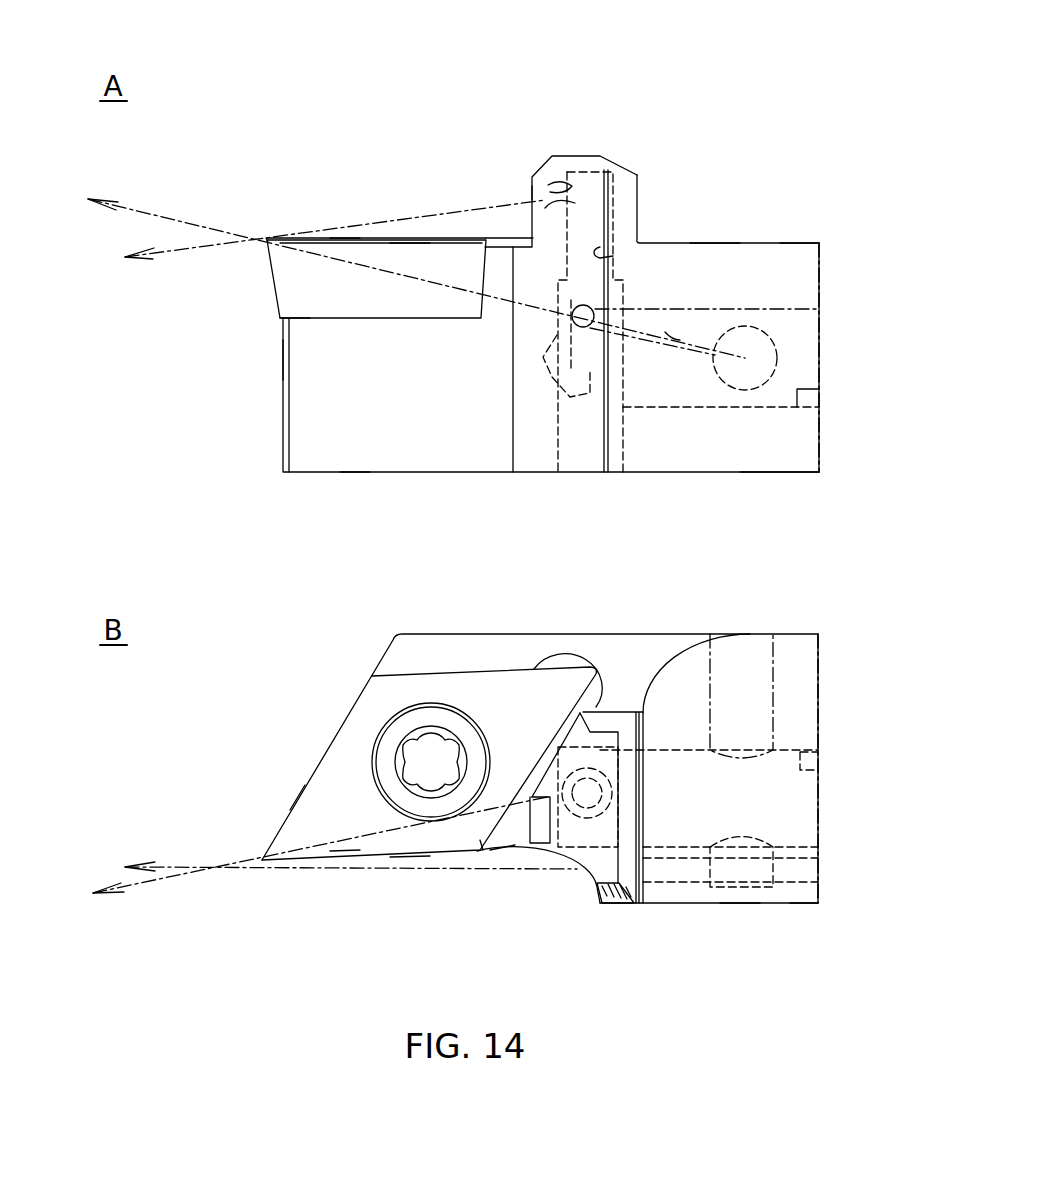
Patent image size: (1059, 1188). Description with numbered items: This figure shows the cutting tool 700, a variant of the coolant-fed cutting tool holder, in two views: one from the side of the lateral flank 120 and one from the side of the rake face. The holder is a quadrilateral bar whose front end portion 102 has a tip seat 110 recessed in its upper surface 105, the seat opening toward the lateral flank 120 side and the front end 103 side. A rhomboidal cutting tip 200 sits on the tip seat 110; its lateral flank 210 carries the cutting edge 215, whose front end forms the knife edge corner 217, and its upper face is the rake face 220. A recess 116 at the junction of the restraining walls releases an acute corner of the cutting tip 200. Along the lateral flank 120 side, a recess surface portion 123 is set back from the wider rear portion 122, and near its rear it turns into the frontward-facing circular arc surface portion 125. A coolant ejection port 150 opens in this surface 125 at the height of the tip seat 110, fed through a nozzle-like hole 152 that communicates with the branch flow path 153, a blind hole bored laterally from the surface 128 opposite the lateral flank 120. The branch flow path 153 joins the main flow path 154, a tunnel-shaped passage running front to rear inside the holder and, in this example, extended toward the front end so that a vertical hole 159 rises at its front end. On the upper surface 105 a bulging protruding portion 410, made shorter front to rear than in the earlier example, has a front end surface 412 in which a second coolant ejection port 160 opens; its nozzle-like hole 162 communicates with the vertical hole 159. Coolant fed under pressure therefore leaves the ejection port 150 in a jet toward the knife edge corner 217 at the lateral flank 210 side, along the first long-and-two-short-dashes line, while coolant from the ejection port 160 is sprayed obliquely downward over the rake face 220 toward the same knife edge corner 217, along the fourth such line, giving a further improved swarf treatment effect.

The cutting tool 700 is at (314, 113).
The front end portion 102 is at (478, 630).
The front end 103 is at (285, 360).
The upper surface 105 is at (713, 243).
The tip seat 110 is at (310, 315).
The recess 116 is at (578, 655).
The lateral flank 120 is at (800, 253).
The rear portion 122 is at (761, 473).
The recess surface portion 123 is at (355, 425).
The circular arc surface portion 125 is at (580, 164).
The surface at the side opposite to the lateral flank 128 is at (672, 634).
The coolant ejection port 150 is at (573, 316).
The nozzle-like hole 152 is at (678, 337).
The branch flow path 153 is at (760, 328).
The main flow path 154 is at (822, 389).
The vertical hole 159 is at (613, 257).
The coolant ejection port 160 is at (532, 197).
The nozzle-like hole 162 is at (578, 200).
The cutting tip 200 is at (340, 712).
The lateral flank 210 is at (403, 257).
The cutting edge 215 is at (352, 235).
The front end (knife edge corner) 217 is at (265, 236).
The rake face 220 is at (310, 233).
The protruding portion 410 is at (640, 181).
The front end surface 412 is at (532, 186).